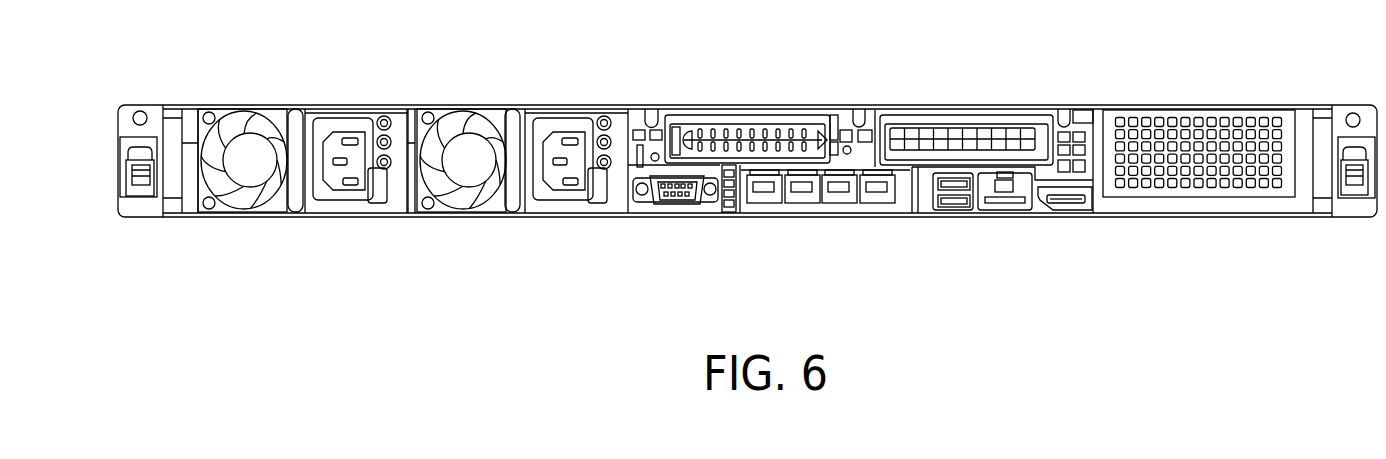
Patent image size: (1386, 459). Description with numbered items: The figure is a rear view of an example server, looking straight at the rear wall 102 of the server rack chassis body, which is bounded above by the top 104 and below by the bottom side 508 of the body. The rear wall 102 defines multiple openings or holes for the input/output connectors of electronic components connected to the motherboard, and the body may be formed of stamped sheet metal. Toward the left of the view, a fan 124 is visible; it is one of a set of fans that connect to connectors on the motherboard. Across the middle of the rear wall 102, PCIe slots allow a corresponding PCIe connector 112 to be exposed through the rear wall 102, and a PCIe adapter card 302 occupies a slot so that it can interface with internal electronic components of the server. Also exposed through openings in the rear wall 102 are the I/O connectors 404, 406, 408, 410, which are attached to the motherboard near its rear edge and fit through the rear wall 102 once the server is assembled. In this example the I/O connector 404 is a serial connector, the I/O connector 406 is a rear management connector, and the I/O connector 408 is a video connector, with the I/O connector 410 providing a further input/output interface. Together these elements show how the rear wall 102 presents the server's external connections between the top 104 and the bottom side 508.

The rear wall 102 is at (227, 217).
The top 104 is at (520, 107).
The fan 124 is at (445, 215).
The bottom side 508 is at (353, 217).
The PCIe connector 112 is at (762, 132).
The I/O connector 404 is at (685, 213).
The PCIe adapter card 302 is at (763, 213).
The I/O connector 406 is at (955, 213).
The I/O connector 408 is at (1005, 213).
The I/O connector 410 is at (1063, 213).